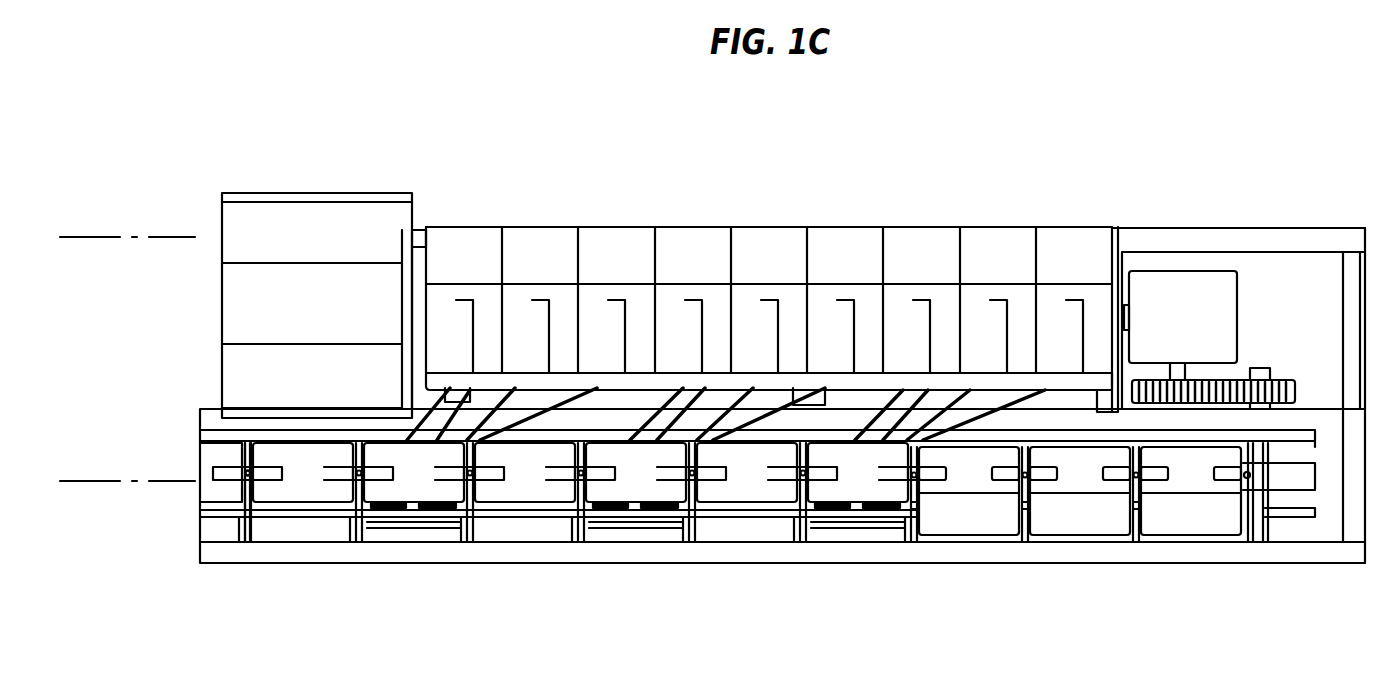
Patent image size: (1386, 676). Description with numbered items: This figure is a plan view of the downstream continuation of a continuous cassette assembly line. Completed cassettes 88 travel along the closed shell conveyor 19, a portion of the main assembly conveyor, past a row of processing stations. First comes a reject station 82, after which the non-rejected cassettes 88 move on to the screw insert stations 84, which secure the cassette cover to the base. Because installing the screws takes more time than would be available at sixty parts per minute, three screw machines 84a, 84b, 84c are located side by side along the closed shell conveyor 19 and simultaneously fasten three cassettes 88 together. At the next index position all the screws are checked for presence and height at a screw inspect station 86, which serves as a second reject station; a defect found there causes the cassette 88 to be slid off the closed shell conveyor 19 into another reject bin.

The closed shell conveyor portion 19 is at (193, 547).
The reject station 82 is at (327, 232).
The screw insert stations 84 is at (762, 264).
The screw machine 84a is at (426, 210).
The screw machine 84b is at (887, 210).
The screw machine 84c is at (996, 258).
The screw inspect station 86 is at (964, 585).
The cassettes 88 is at (417, 466).